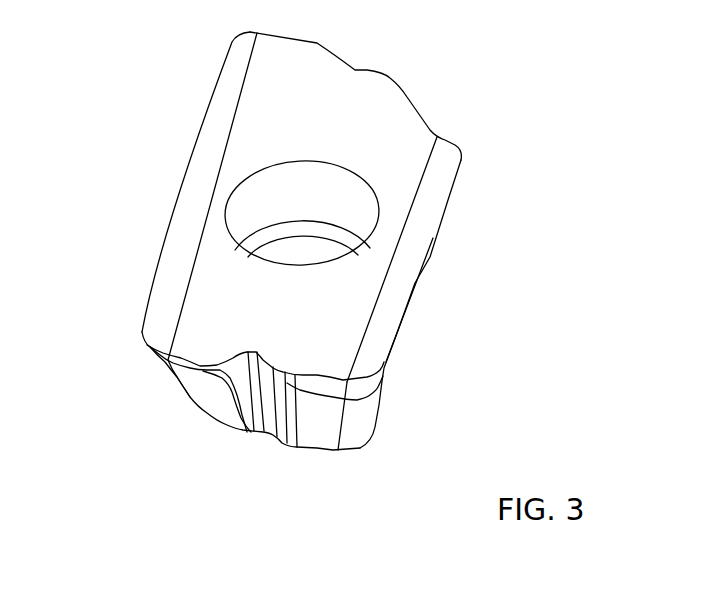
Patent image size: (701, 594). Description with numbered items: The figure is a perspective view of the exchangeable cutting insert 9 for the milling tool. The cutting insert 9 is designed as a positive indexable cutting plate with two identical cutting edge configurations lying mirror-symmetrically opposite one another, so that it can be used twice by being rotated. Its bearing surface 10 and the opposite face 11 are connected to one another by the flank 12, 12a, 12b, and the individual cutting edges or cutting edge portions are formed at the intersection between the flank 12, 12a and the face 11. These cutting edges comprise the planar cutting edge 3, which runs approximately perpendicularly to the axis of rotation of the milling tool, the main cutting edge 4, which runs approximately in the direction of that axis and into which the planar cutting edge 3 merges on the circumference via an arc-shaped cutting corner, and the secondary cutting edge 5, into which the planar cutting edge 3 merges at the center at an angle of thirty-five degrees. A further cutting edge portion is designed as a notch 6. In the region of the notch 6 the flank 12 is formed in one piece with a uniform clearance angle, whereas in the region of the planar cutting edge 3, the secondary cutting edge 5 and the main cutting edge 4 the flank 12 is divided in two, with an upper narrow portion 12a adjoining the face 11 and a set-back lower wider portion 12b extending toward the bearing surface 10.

The planar cutting edge 3 is at (315, 375).
The main cutting edge 4 is at (415, 283).
The secondary cutting edge 5 is at (181, 358).
The notch 6 is at (275, 372).
The cutting insert 9 is at (467, 255).
The bearing surface 10 is at (388, 400).
The face 11 is at (435, 185).
The flank 12 is at (262, 402).
The upper narrow portion 12a is at (201, 366).
The set-back lower wider portion 12b is at (207, 395).